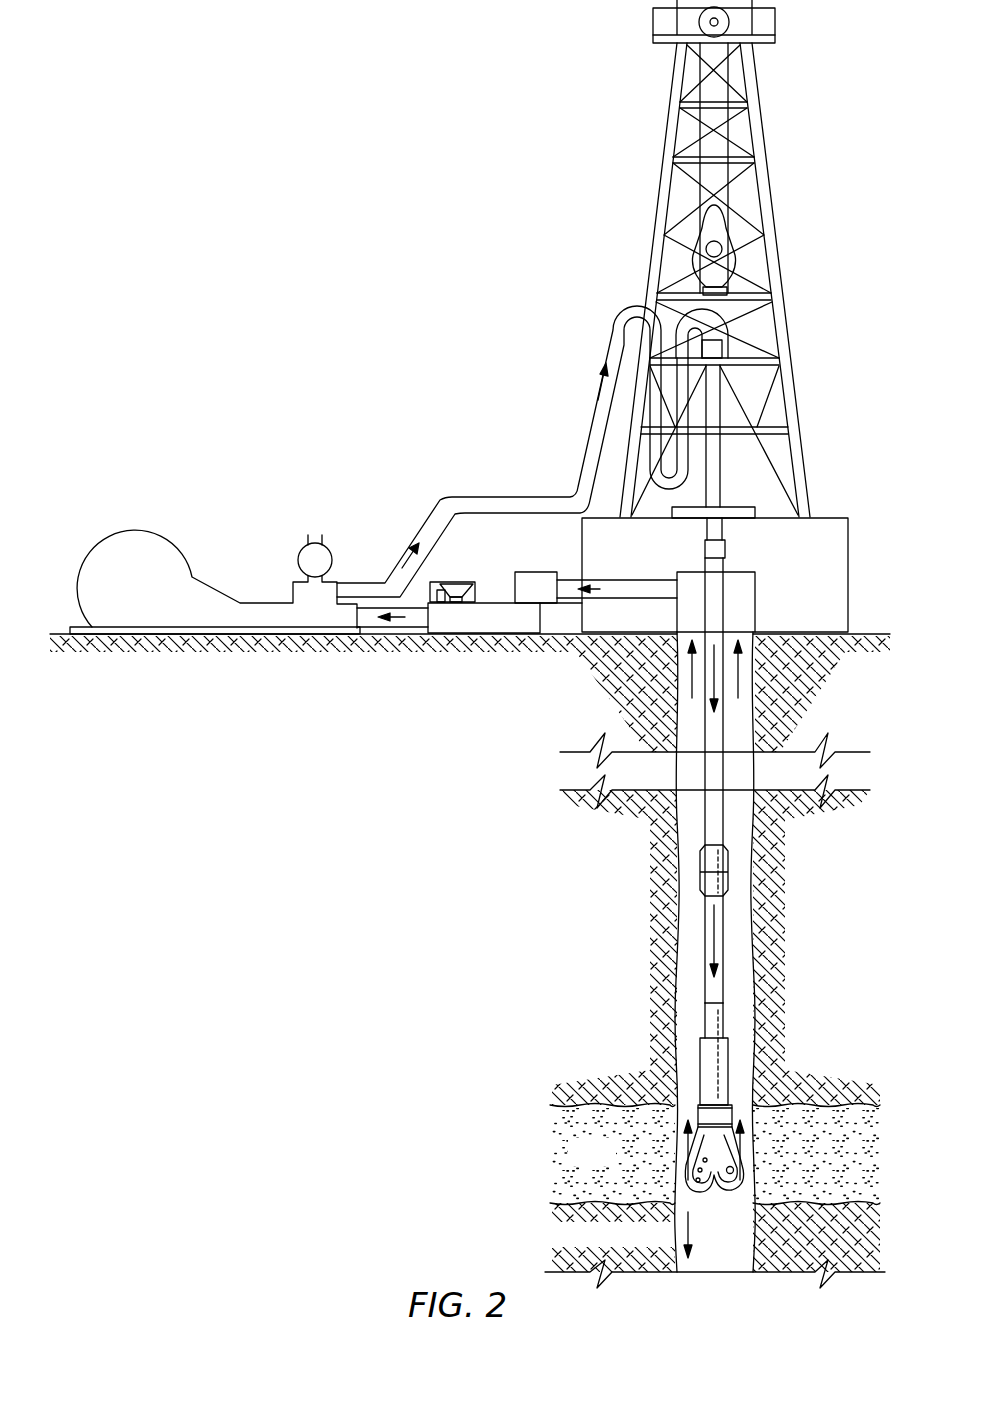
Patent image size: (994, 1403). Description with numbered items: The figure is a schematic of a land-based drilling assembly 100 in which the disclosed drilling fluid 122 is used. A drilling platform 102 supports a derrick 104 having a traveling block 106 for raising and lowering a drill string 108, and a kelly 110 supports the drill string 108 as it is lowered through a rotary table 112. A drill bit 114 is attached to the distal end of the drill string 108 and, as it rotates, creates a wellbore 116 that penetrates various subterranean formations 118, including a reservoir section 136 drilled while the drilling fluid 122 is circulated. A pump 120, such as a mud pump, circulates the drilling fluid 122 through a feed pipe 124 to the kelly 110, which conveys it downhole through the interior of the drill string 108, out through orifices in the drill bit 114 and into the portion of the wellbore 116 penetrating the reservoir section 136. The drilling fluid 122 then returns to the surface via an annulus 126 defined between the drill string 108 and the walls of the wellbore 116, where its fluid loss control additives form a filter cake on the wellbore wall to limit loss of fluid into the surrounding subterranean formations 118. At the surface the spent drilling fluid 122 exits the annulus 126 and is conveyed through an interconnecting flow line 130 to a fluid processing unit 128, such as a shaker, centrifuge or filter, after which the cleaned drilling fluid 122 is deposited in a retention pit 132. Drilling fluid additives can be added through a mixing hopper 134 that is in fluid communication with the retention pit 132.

The drilling assembly 100 is at (330, 170).
The drilling platform 102 is at (816, 586).
The derrick 104 is at (782, 283).
The traveling block 106 is at (727, 237).
The drill string 108 is at (703, 713).
The kelly 110 is at (723, 473).
The rotary table 112 is at (757, 512).
The drill bit 114 is at (745, 1145).
The wellbore 116 is at (750, 962).
The subterranean formations 118 is at (609, 882).
The pump 120 is at (168, 544).
The drilling fluid 122 is at (388, 580).
The feed pipe 124 is at (510, 496).
The annulus 126 is at (740, 998).
The fluid processing unit 128 is at (535, 572).
The interconnecting flow line 130 is at (657, 573).
The retention pit 132 is at (490, 624).
The mixing hopper 134 is at (455, 580).
The reservoir section 136 is at (609, 1164).